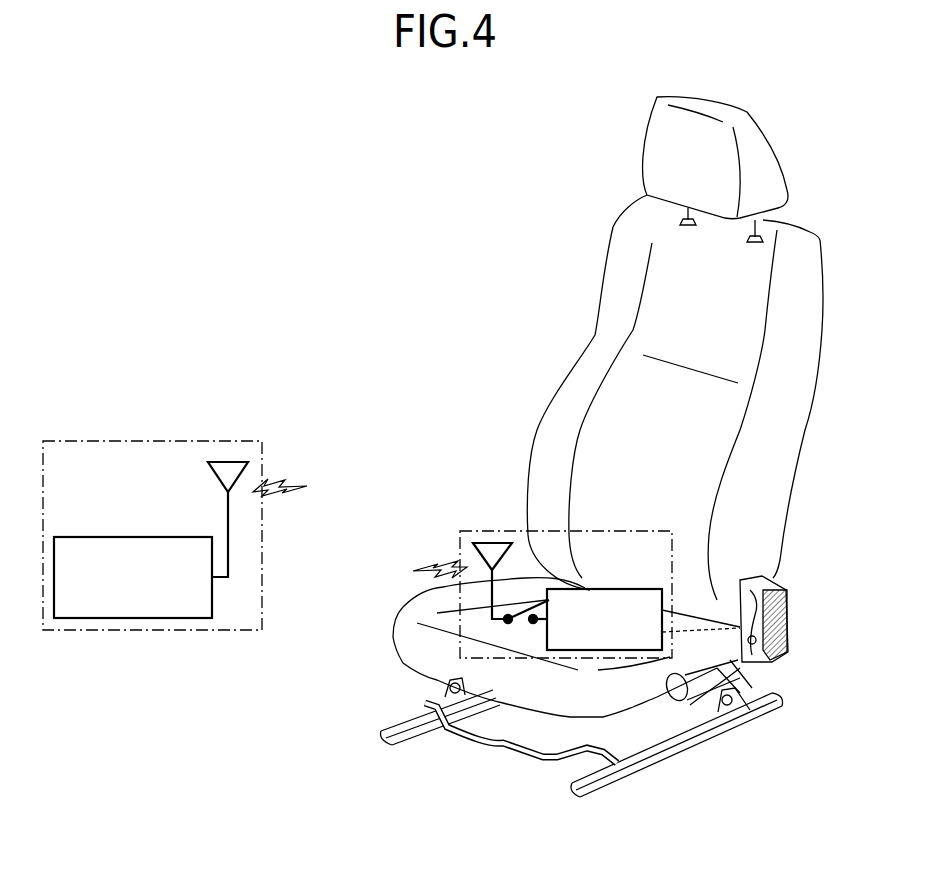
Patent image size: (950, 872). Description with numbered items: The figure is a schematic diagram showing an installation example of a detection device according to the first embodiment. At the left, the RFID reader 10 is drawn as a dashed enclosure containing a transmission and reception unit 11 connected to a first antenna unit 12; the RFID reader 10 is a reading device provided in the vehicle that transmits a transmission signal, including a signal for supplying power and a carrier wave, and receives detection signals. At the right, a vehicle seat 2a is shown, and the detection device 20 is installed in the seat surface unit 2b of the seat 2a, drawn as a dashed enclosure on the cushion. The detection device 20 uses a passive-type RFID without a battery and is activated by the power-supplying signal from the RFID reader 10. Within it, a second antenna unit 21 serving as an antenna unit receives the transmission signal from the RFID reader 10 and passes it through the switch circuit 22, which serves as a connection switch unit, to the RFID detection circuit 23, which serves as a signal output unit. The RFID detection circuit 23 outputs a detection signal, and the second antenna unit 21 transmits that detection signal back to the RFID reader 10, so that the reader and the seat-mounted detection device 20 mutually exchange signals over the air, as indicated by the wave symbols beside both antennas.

The RFID reader 10 is at (212, 429).
The transmission and reception unit 11 is at (142, 522).
The first antenna unit 12 is at (208, 476).
The seat 2a is at (592, 320).
The seat surface unit 2b is at (442, 623).
The detection device 20 is at (619, 532).
The second antenna unit 21 is at (495, 543).
The switch circuit 22 is at (523, 600).
The RFID detection circuit 23 is at (618, 590).